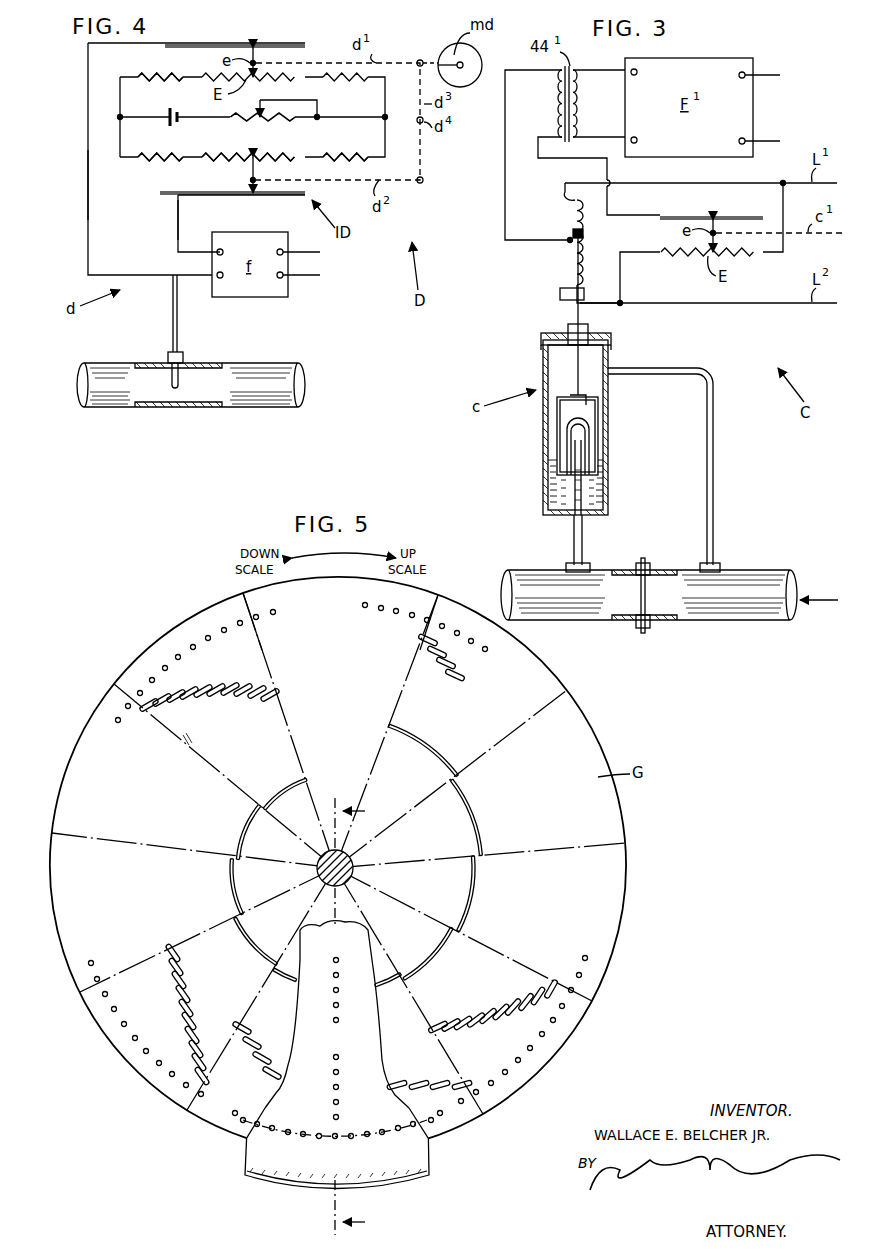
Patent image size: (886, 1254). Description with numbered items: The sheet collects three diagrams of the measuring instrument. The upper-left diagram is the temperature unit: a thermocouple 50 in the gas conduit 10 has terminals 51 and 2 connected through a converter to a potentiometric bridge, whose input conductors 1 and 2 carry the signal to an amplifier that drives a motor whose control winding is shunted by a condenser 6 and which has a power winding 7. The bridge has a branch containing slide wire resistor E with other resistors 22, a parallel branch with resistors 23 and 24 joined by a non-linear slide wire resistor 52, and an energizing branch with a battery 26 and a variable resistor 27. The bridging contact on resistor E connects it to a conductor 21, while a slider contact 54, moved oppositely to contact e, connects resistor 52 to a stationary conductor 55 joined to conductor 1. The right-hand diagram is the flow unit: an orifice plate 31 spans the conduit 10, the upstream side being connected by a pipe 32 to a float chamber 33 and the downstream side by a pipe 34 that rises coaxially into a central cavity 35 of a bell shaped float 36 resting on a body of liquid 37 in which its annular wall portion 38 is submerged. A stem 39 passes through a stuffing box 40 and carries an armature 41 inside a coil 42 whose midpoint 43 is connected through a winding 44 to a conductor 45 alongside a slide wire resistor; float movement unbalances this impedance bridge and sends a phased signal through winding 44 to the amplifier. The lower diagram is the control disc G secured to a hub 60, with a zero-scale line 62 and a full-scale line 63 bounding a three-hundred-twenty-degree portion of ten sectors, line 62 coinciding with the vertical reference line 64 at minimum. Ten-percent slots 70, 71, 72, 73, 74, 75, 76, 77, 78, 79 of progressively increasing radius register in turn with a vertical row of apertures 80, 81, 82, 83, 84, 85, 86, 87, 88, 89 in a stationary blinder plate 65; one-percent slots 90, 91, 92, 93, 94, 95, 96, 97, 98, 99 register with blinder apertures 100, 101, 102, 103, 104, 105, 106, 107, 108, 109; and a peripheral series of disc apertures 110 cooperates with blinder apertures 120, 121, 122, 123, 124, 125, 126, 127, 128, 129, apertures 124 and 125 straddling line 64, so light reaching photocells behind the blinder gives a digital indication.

In FIG. 4, the conductor 1 is at (178, 209).
In FIG. 3, the conductor 1 is at (606, 64).
In FIG. 4, the conductor 2 is at (188, 290).
In FIG. 3, the conductor 2 is at (612, 136).
In FIG. 4, the conduit 10 is at (126, 365).
In FIG. 3, the conduit 10 is at (546, 568).
In FIG. 4, the conductor 21 is at (274, 44).
In FIG. 4, the resistors 22 is at (169, 74).
In FIG. 4, the resistor 23 is at (169, 150).
In FIG. 4, the resistor 24 is at (356, 150).
In FIG. 4, the battery 26 is at (171, 105).
In FIG. 4, the variable resistor 27 is at (276, 118).
In FIG. 3, the orifice plate 31 is at (644, 556).
In FIG. 3, the pipe 32 is at (716, 474).
In FIG. 3, the float chamber 33 is at (548, 430).
In FIG. 3, the pipe 34 is at (583, 538).
In FIG. 3, the central cavity 35 is at (590, 430).
In FIG. 3, the bell shaped float 36 is at (610, 409).
In FIG. 3, the body of liquid 37 is at (600, 488).
In FIG. 3, the annular wall portion 38 is at (594, 448).
In FIG. 3, the stem 39 is at (575, 310).
In FIG. 3, the stuffing box 40 is at (541, 338).
In FIG. 3, the armature 41 is at (572, 242).
In FIG. 3, the coil 42 is at (572, 208).
In FIG. 3, the midpoint 43 is at (570, 232).
In FIG. 3, the winding 44 is at (552, 105).
In FIG. 3, the conductor 45 is at (703, 212).
In FIG. 4, the thermocouple 50 is at (172, 380).
In FIG. 4, the terminal 51 is at (88, 184).
In FIG. 4, the non-linear slide wire resistor 52 is at (261, 150).
In FIG. 4, the slider contact 54 is at (250, 178).
In FIG. 4, the stationary conductor 55 is at (258, 200).
In FIG. 5, the hub 60 is at (352, 852).
In FIG. 5, the radial line 62 is at (265, 651).
In FIG. 5, the radial line 63 is at (410, 654).
In FIG. 5, the vertical reference line 64 is at (332, 1222).
In FIG. 5, the blinder plate 65 is at (424, 1166).
In FIG. 5, the slot 70 is at (290, 790).
In FIG. 5, the slot 71 is at (248, 822).
In FIG. 5, the slot 72 is at (231, 888).
In FIG. 5, the slot 73 is at (260, 949).
In FIG. 5, the slot 74 is at (288, 982).
In FIG. 5, the slot 75 is at (388, 988).
In FIG. 5, the slot 76 is at (436, 958).
In FIG. 5, the slot 77 is at (475, 892).
In FIG. 5, the slot 78 is at (474, 810).
In FIG. 5, the slot 79 is at (424, 740).
In FIG. 5, the blinder aperture 80 is at (338, 960).
In FIG. 5, the blinder aperture 81 is at (333, 960).
In FIG. 5, the blinder aperture 82 is at (338, 975).
In FIG. 5, the blinder aperture 83 is at (334, 975).
In FIG. 5, the blinder aperture 84 is at (338, 990).
In FIG. 5, the blinder aperture 85 is at (334, 990).
In FIG. 5, the blinder aperture 86 is at (338, 1007).
In FIG. 5, the blinder aperture 87 is at (334, 1006).
In FIG. 5, the blinder aperture 88 is at (342, 1018).
In FIG. 5, the blinder aperture 89 is at (334, 1020).
In FIG. 5, the slot 90 is at (274, 692).
In FIG. 5, the slot 91 is at (262, 688).
In FIG. 5, the slot 92 is at (246, 700).
In FIG. 5, the slot 93 is at (232, 689).
In FIG. 5, the slot 94 is at (220, 696).
In FIG. 5, the slot 95 is at (205, 682).
In FIG. 5, the slot 96 is at (193, 700).
In FIG. 5, the slot 97 is at (176, 690).
In FIG. 5, the slot 98 is at (165, 704).
In FIG. 5, the slot 99 is at (149, 712).
In FIG. 5, the blinder aperture 100 is at (338, 1057).
In FIG. 5, the blinder aperture 101 is at (334, 1059).
In FIG. 5, the blinder aperture 102 is at (338, 1072).
In FIG. 5, the blinder aperture 103 is at (334, 1072).
In FIG. 5, the blinder aperture 104 is at (338, 1087).
In FIG. 5, the blinder aperture 105 is at (334, 1087).
In FIG. 5, the blinder aperture 106 is at (338, 1102).
In FIG. 5, the blinder aperture 107 is at (334, 1102).
In FIG. 5, the blinder aperture 108 is at (338, 1117).
In FIG. 5, the blinder aperture 109 is at (334, 1117).
In FIG. 5, the disc apertures 110 is at (308, 616).
In FIG. 5, the blinder aperture 120 is at (420, 1128).
In FIG. 5, the blinder aperture 121 is at (384, 1132).
In FIG. 5, the blinder aperture 122 is at (368, 1136).
In FIG. 5, the blinder aperture 123 is at (354, 1137).
In FIG. 5, the blinder aperture 124 is at (332, 1139).
In FIG. 5, the blinder aperture 125 is at (308, 1136).
In FIG. 5, the blinder aperture 126 is at (288, 1135).
In FIG. 5, the blinder aperture 127 is at (272, 1130).
In FIG. 5, the blinder aperture 128 is at (256, 1128).
In FIG. 5, the blinder aperture 129 is at (238, 1128).
In FIG. 5, the condenser 6 is at (356, 1016).
In FIG. 5, the power winding 7 is at (258, 1113).